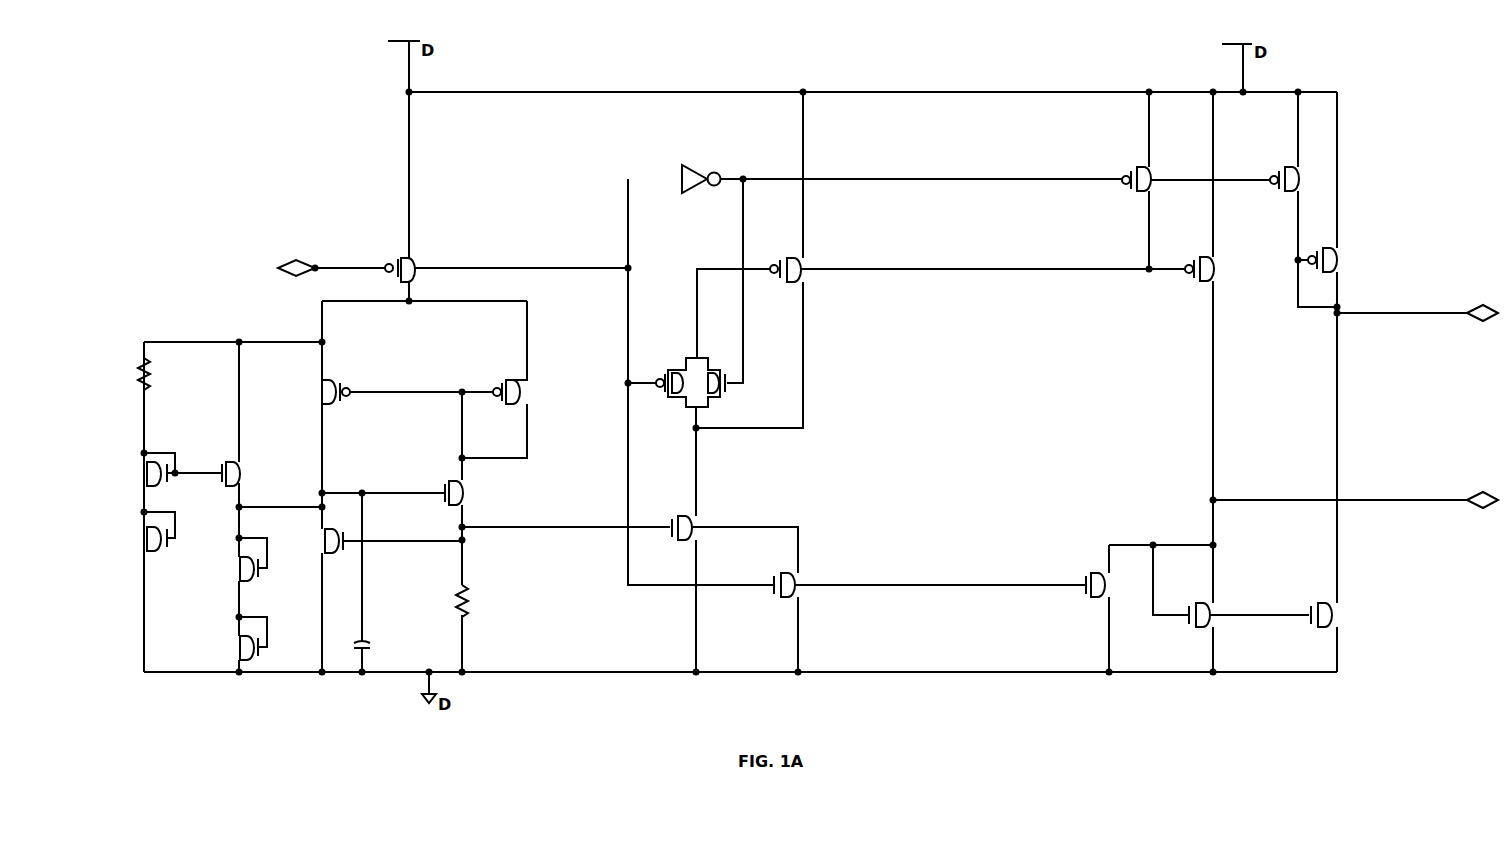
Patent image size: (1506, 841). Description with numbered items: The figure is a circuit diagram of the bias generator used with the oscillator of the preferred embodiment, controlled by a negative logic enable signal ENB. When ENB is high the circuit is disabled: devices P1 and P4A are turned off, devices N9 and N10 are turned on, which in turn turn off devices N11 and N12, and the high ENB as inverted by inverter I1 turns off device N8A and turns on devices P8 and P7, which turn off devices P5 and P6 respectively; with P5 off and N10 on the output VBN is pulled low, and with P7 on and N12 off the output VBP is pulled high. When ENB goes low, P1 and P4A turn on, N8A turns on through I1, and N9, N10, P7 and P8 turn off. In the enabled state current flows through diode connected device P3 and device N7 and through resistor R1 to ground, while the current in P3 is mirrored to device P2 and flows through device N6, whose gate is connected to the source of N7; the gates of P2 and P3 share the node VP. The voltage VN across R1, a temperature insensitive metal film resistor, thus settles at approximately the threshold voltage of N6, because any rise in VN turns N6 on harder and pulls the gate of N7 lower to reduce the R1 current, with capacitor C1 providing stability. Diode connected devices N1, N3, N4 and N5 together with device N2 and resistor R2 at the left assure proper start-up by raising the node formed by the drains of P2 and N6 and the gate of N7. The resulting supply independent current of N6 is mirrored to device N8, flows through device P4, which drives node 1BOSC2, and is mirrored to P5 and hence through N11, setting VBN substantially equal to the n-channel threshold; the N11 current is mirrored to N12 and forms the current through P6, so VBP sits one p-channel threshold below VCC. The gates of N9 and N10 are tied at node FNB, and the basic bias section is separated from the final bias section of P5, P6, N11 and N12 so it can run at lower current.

The device P1 is at (398, 196).
The device P2 is at (336, 352).
The diode connected device P3 is at (506, 380).
The device P4 is at (785, 187).
The device P4A is at (674, 376).
The device P5 is at (1195, 186).
The device P6 is at (1319, 246).
The device P7 is at (1283, 141).
The device P8 is at (1131, 141).
The diode connected device N1 is at (159, 458).
The device N2 is at (207, 465).
The diode connected device N3 is at (159, 522).
The diode connected device N4 is at (253, 548).
The diode connected device N5 is at (253, 628).
The device N6 is at (339, 530).
The device N7 is at (447, 482).
The device N8 is at (679, 512).
The device N8A is at (721, 367).
The device N9 is at (782, 572).
The device N10 is at (1087, 571).
The device N11 is at (1190, 603).
The device N12 is at (1310, 603).
The resistor R1 is at (449, 601).
The resistor R2 is at (159, 374).
The capacitor C1 is at (359, 582).
The inverter I1 is at (701, 164).
The enable signal ENB is at (331, 261).
The node VP is at (421, 425).
The voltage VN is at (630, 539).
The node FNB is at (940, 570).
The output VBP is at (1417, 308).
The output VBN is at (1355, 513).
The node 1BOSC2 is at (749, 358).